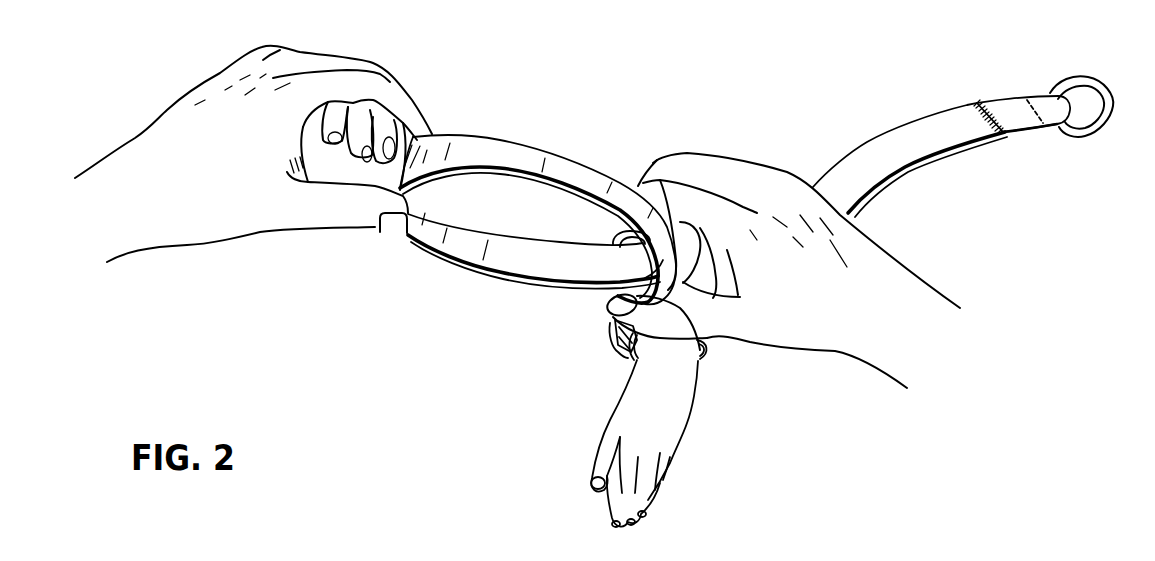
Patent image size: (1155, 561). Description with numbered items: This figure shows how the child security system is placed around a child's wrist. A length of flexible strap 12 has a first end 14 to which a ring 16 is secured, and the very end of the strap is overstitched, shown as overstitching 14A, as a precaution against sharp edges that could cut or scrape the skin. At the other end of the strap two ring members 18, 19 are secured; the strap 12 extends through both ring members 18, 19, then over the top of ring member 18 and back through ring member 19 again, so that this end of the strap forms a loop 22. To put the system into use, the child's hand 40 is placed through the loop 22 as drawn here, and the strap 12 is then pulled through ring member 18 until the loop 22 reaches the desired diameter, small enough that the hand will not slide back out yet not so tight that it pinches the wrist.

The flexible strap 12 is at (490, 262).
The first end 14 is at (941, 134).
The overstitching 14A is at (1018, 95).
The ring 16 is at (1090, 83).
The ring member 18 is at (608, 291).
The ring member 19 is at (704, 343).
The loop 22 is at (618, 344).
The child's hand 40 is at (687, 423).